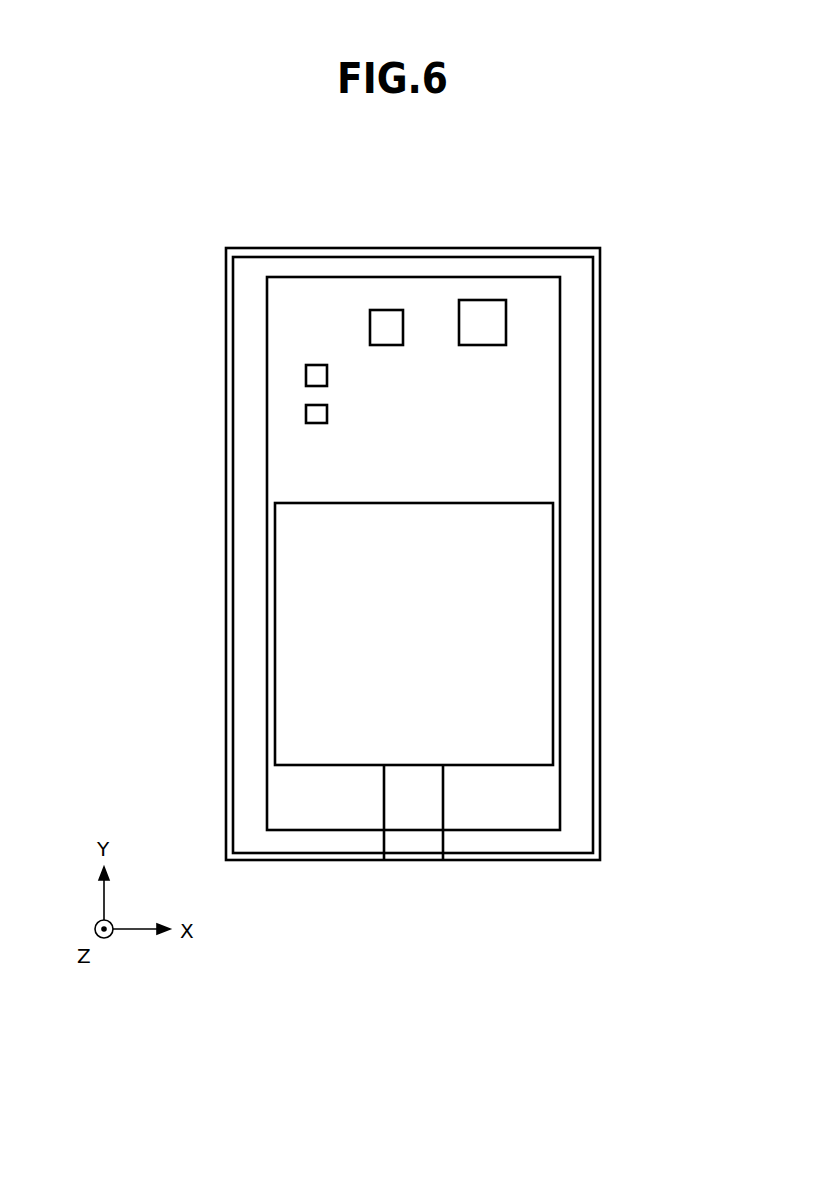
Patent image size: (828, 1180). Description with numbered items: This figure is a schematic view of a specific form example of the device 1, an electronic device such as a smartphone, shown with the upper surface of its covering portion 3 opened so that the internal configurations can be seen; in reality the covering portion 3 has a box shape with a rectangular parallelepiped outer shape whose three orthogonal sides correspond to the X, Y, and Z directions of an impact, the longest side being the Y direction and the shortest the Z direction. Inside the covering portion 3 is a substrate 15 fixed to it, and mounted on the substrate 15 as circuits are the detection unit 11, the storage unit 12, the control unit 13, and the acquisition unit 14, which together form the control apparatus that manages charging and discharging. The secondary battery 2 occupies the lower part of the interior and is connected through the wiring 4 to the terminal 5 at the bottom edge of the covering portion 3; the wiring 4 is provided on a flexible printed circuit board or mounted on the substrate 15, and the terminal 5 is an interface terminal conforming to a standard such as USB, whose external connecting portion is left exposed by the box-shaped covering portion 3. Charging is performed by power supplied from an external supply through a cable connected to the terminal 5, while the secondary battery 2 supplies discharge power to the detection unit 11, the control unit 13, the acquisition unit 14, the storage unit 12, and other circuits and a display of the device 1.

The device 1 is at (446, 205).
The secondary battery 2 is at (533, 501).
The covering portion 3 is at (541, 247).
The wiring 4 is at (418, 781).
The terminal 5 is at (413, 862).
The detection unit 11 is at (306, 377).
The storage unit 12 is at (370, 325).
The control unit 13 is at (506, 320).
The acquisition unit 14 is at (306, 414).
The substrate 15 is at (560, 382).